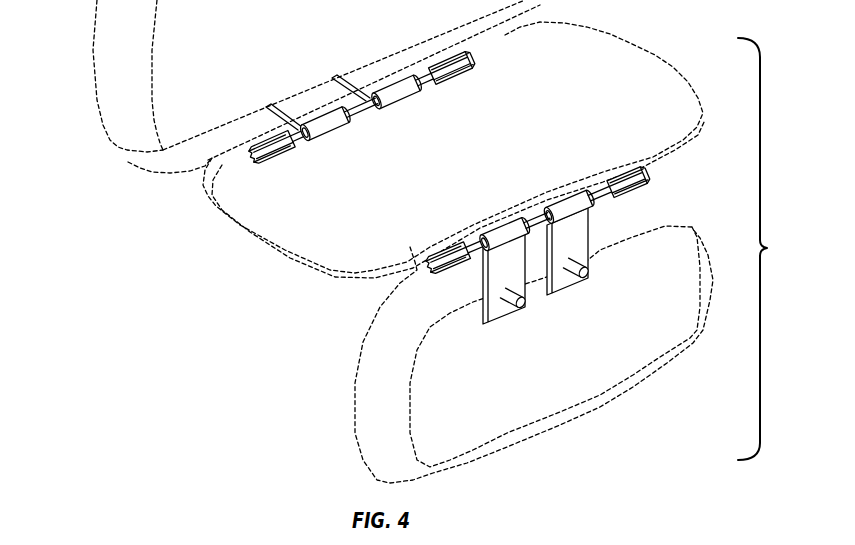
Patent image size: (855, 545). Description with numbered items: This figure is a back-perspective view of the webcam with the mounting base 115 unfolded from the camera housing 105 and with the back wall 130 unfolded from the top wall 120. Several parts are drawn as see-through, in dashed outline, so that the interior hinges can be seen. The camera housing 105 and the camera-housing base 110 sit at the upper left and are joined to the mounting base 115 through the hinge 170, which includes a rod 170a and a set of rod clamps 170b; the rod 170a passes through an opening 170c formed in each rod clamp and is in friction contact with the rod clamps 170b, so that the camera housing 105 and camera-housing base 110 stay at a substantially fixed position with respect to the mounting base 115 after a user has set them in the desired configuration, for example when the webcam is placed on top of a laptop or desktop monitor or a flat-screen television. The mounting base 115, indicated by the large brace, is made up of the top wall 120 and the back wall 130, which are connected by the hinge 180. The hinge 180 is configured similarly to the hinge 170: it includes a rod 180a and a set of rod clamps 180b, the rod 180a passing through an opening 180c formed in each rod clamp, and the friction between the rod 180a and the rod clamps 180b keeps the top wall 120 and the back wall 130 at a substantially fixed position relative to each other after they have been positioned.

The camera housing 105 is at (107, 37).
The camera-housing base 110 is at (141, 162).
The mounting base 115 is at (770, 249).
The top wall 120 is at (590, 97).
The back wall 130 is at (568, 369).
The hinge 170 is at (248, 163).
The rod 170a is at (280, 161).
The rod clamps 170b is at (333, 127).
The opening 170c is at (367, 98).
The hinge 180 is at (662, 172).
The rod 180a is at (433, 263).
The rod clamps 180b is at (568, 200).
The opening 180c is at (542, 222).